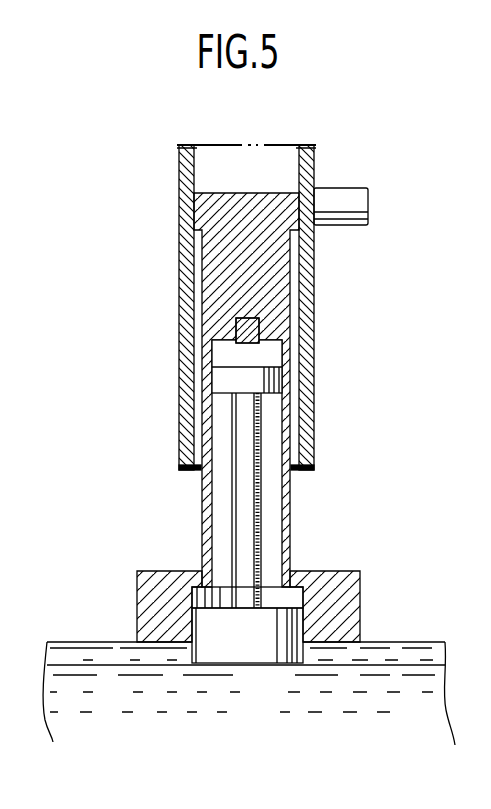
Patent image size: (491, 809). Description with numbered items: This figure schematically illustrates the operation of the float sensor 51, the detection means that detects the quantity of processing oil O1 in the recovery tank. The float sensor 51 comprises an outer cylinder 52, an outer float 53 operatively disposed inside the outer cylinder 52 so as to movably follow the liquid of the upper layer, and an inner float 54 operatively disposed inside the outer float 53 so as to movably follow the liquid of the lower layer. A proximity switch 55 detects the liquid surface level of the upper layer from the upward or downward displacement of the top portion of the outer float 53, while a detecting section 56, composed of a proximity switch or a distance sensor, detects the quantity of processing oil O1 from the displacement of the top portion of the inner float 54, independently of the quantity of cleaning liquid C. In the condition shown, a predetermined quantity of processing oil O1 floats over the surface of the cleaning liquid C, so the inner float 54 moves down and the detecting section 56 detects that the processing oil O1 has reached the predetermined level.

The float sensor 51 is at (113, 292).
The outer cylinder 52 is at (178, 383).
The outer float 53 is at (137, 587).
The inner float 54 is at (287, 628).
The proximity switch 55 is at (345, 227).
The detecting section 56 is at (260, 330).
The processing oil O1 is at (77, 650).
The cleaning liquid C is at (102, 703).